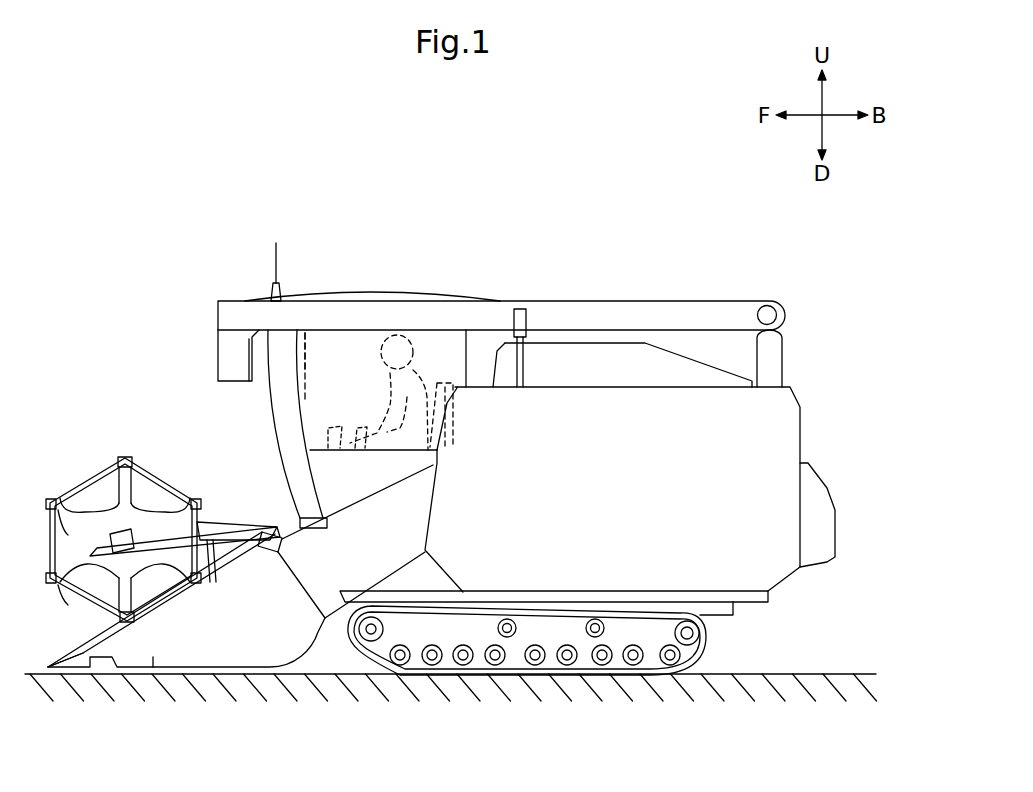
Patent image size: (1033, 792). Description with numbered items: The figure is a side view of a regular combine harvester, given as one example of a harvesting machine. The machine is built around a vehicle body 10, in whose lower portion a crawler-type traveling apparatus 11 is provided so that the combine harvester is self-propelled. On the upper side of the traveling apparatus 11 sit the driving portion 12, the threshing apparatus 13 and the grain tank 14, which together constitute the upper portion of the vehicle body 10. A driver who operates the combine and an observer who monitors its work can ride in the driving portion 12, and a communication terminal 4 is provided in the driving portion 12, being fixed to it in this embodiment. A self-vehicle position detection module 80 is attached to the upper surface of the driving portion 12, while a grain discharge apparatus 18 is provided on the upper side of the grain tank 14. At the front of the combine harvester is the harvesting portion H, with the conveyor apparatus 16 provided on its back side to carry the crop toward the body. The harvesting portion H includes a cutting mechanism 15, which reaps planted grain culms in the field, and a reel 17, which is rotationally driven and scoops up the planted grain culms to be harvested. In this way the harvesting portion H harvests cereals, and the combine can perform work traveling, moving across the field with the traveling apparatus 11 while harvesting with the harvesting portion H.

The vehicle body 10 is at (795, 594).
The crawler-type traveling apparatus 11 is at (700, 650).
The driving portion 12 is at (338, 377).
The threshing apparatus 13 is at (780, 427).
The grain tank 14 is at (590, 357).
The cutting mechanism 15 is at (128, 668).
The conveyor apparatus 16 is at (307, 553).
The reel 17 is at (72, 483).
The grain discharge apparatus 18 is at (677, 310).
The communication terminal 4 is at (307, 352).
The self-vehicle position detection module 80 is at (279, 262).
The harvesting portion H is at (130, 450).